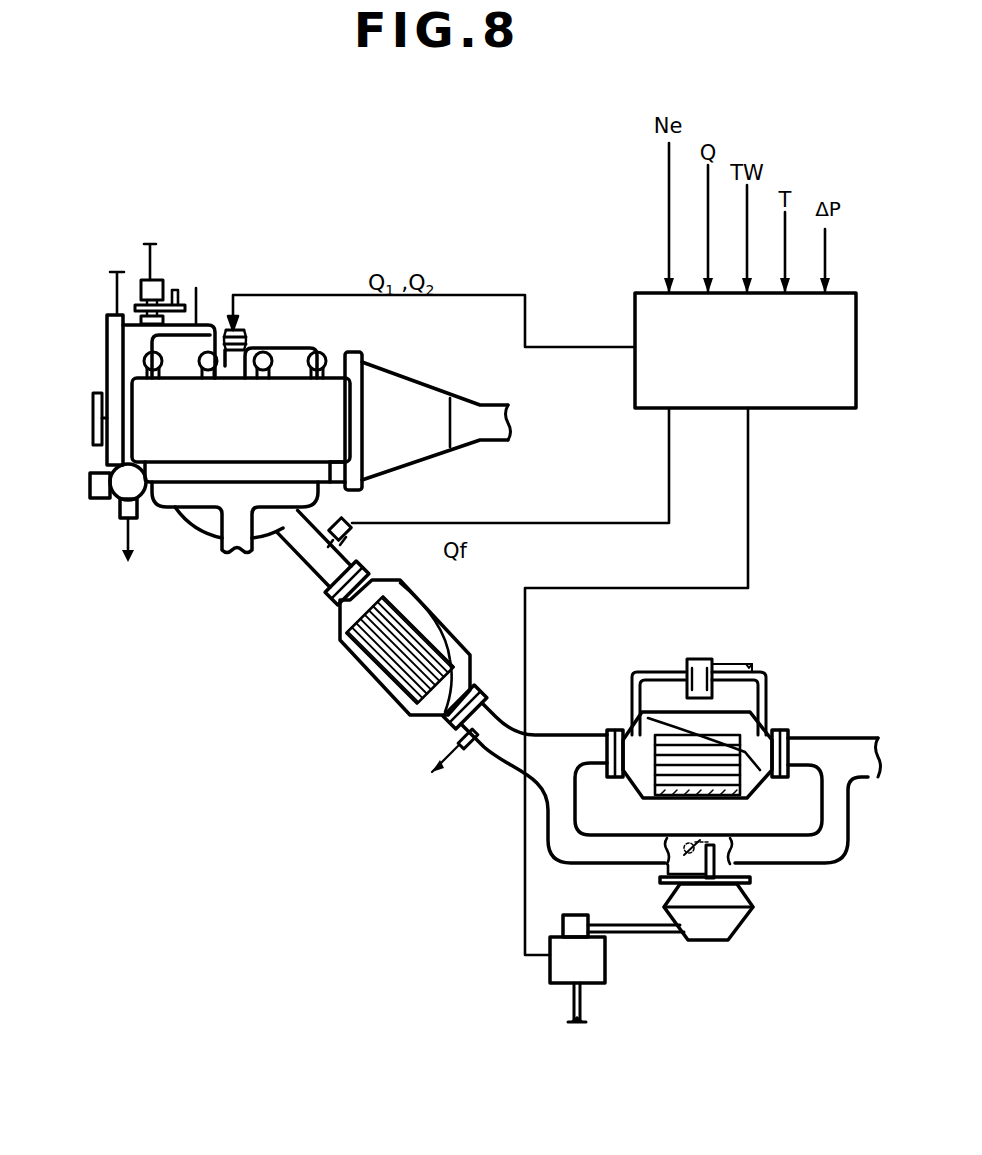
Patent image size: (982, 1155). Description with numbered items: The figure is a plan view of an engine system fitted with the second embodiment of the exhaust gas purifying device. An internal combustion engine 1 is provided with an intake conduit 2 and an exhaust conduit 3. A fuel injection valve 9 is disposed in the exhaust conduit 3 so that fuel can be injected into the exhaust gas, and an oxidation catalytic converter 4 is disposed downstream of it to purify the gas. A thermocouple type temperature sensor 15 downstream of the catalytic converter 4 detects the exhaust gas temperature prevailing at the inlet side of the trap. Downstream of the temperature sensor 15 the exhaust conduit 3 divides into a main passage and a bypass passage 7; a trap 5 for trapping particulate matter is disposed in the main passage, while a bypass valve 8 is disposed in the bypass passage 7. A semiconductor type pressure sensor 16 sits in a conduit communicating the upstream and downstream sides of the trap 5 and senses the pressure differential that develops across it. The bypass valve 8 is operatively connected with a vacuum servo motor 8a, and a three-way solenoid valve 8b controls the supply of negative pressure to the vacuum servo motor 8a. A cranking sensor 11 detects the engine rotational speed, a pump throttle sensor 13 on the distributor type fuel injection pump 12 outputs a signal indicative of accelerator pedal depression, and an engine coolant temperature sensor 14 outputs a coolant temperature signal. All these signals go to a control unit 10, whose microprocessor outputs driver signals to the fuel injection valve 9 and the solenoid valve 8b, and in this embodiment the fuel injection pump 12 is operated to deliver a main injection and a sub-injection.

The internal combustion engine 1 is at (330, 393).
The intake conduit 2 is at (230, 517).
The exhaust conduit 3 is at (306, 552).
The catalytic converter 4 is at (362, 668).
The trap 5 is at (645, 770).
The bypass passage 7 is at (622, 852).
The bypass valve 8 is at (700, 838).
The vacuum servo motor 8a is at (721, 935).
The solenoid valve 8b is at (605, 968).
The fuel injection valve 9 is at (362, 536).
The control unit 10 is at (818, 410).
The cranking sensor 11 is at (107, 324).
The fuel injection pump 12 is at (241, 332).
The pump throttle sensor 13 is at (160, 273).
The engine coolant temperature sensor 14 is at (117, 508).
The temperature sensor 15 is at (474, 753).
The pressure sensor 16 is at (697, 656).